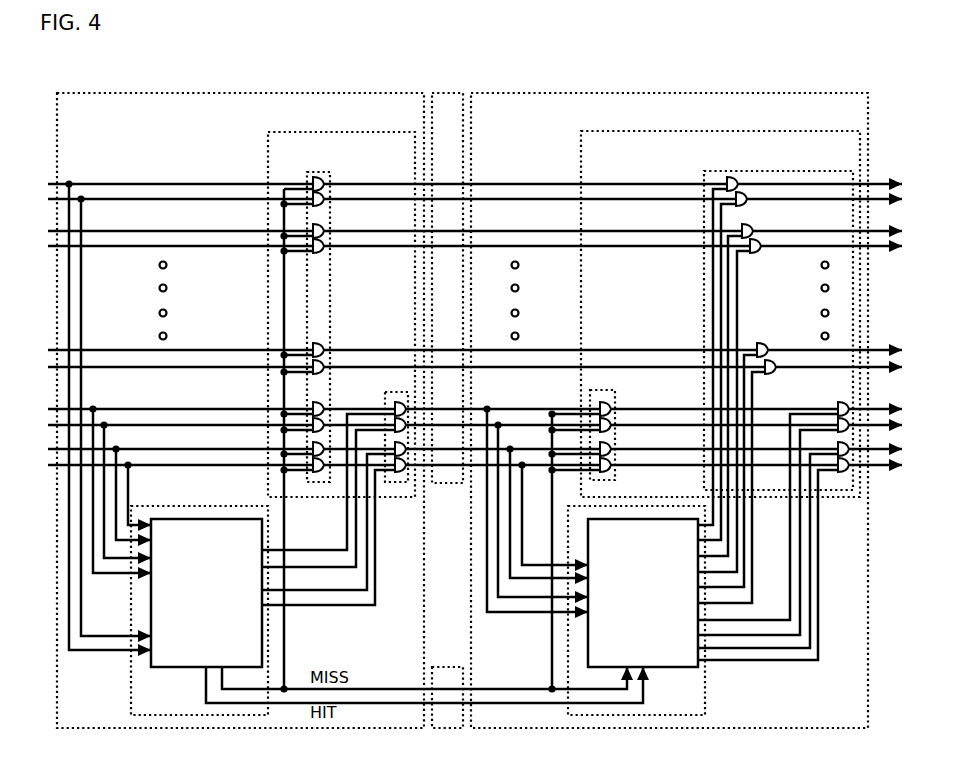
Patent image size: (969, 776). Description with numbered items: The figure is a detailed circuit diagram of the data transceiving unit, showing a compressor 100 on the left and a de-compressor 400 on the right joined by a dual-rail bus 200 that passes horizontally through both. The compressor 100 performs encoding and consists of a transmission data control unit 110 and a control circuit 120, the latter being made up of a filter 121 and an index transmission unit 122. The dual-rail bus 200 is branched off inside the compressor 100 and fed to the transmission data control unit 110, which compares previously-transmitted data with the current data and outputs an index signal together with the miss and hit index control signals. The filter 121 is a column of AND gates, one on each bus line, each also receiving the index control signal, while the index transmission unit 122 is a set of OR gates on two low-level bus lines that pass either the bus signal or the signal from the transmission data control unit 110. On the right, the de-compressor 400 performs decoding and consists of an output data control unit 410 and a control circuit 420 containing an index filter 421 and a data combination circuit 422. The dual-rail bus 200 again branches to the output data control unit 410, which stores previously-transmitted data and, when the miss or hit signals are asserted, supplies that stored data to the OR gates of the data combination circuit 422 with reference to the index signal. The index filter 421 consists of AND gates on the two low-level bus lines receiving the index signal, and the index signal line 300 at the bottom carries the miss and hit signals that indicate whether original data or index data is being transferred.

The compressor 100 is at (196, 94).
The transmission data control unit 110 is at (188, 507).
The control circuit 120 is at (318, 133).
The filter 121 is at (322, 173).
The index transmission unit 122 is at (388, 392).
The dual-rail bus 200 is at (444, 94).
The index signal line 300 is at (447, 730).
The de-compressor 400 is at (658, 94).
The output data control unit 410 is at (706, 686).
The control circuit 420 is at (733, 132).
The index filter 421 is at (616, 404).
The data combination circuit 422 is at (775, 172).